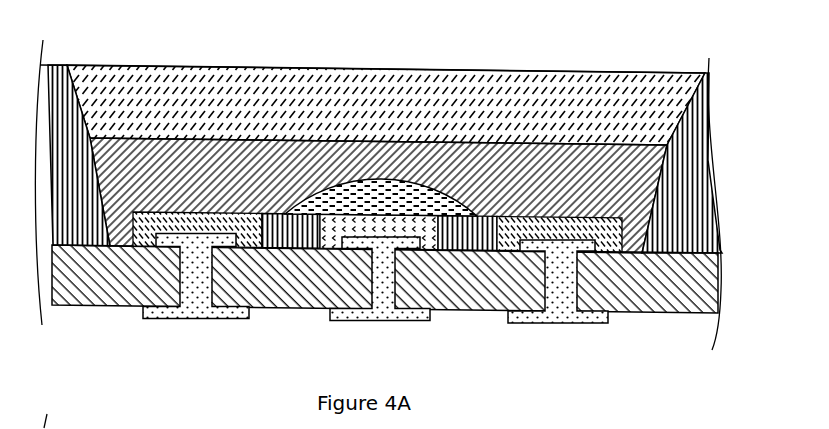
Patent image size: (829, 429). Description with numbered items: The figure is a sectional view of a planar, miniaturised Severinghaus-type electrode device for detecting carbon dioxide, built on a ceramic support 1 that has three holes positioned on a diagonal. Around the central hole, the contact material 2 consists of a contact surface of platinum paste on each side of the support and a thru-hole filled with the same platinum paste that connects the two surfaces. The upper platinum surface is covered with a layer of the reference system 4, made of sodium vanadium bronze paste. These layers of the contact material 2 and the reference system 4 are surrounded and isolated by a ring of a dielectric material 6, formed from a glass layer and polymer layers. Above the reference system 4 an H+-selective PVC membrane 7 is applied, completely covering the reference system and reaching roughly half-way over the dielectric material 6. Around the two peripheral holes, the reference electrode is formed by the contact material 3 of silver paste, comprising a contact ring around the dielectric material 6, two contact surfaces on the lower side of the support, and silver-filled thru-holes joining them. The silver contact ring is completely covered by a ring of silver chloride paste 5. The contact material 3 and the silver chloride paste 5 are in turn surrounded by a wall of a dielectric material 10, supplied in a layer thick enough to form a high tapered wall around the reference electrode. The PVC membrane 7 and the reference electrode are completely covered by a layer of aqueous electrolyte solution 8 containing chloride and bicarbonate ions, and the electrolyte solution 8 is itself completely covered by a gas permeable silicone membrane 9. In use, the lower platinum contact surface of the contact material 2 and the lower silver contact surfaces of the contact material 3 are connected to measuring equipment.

The ceramic support 1 is at (100, 291).
The contact material 2 is at (372, 308).
The contact material of the reference electrode 3 is at (561, 314).
The reference system 4 is at (332, 225).
The silver chloride paste 5 is at (613, 240).
The dielectric material 6 is at (272, 216).
The H+-selective PVC membrane 7 is at (319, 197).
The aqueous electrolyte solution 8 is at (431, 166).
The gas permeable silicone membrane 9 is at (551, 118).
The dielectric material 10 is at (50, 70).